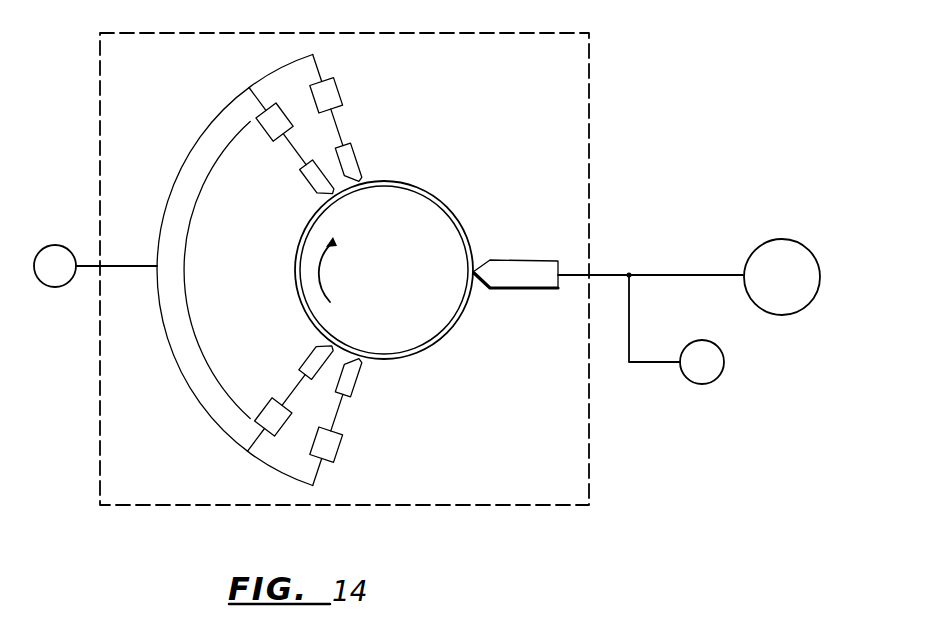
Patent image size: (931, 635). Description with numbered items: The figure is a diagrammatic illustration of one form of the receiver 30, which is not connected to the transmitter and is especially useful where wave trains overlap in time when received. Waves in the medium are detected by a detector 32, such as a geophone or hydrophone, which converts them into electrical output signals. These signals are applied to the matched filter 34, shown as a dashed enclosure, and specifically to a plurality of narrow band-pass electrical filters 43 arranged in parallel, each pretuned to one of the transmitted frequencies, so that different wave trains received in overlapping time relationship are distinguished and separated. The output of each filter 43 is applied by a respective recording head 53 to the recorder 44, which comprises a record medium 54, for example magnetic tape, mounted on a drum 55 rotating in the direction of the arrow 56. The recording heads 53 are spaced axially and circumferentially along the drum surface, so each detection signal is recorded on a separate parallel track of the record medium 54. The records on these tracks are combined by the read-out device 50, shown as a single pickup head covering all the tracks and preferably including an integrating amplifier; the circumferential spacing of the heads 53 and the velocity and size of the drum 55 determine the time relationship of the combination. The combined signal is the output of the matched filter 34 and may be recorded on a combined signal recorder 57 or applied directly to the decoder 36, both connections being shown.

The receiver 30 is at (776, 52).
The detector 32 is at (55, 245).
The matched filter 34 is at (101, 86).
The decoder 36 is at (725, 364).
The narrow band-pass electrical filter 43 is at (344, 92).
The recorder 44 is at (409, 254).
The read-out device 50 is at (537, 263).
The recording head 53 is at (357, 154).
The record medium 54 is at (411, 184).
The drum 55 is at (447, 316).
The arrow 56 is at (330, 275).
The combined signal recorder 57 is at (791, 239).